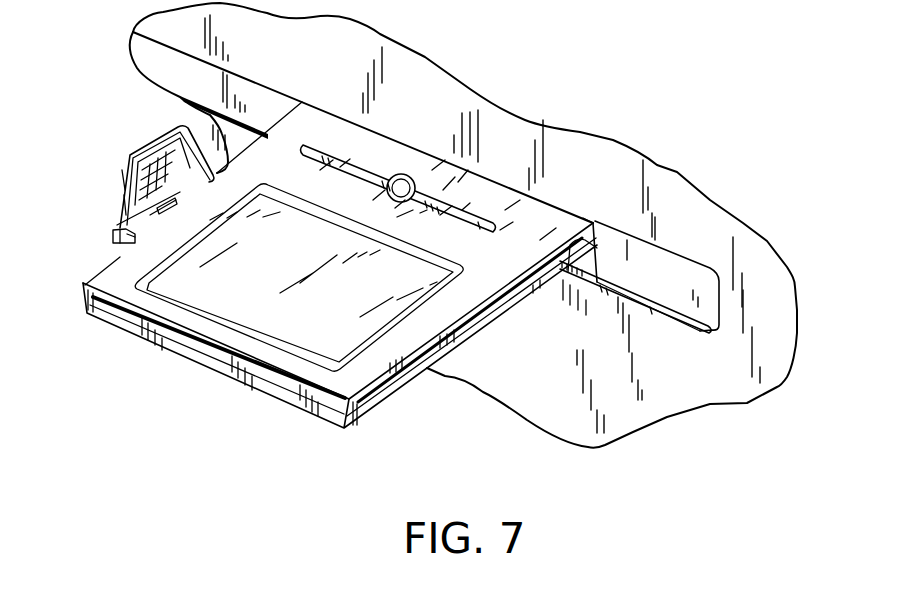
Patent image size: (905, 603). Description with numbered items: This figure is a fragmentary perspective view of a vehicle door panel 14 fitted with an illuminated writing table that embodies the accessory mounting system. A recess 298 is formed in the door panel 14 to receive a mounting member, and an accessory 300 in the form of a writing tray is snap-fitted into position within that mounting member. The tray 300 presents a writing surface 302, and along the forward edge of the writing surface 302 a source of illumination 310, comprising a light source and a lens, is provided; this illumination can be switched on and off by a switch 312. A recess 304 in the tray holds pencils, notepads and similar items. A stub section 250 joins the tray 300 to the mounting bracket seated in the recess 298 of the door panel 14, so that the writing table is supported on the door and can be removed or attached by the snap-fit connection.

The vehicle door panel 14 is at (630, 158).
The stub section 250 is at (590, 241).
The recess 298 is at (669, 287).
The accessory 300 is at (300, 416).
The writing surface 302 is at (236, 312).
The recess 304 is at (362, 166).
The source of illumination 310 is at (165, 152).
The switch 312 is at (117, 227).